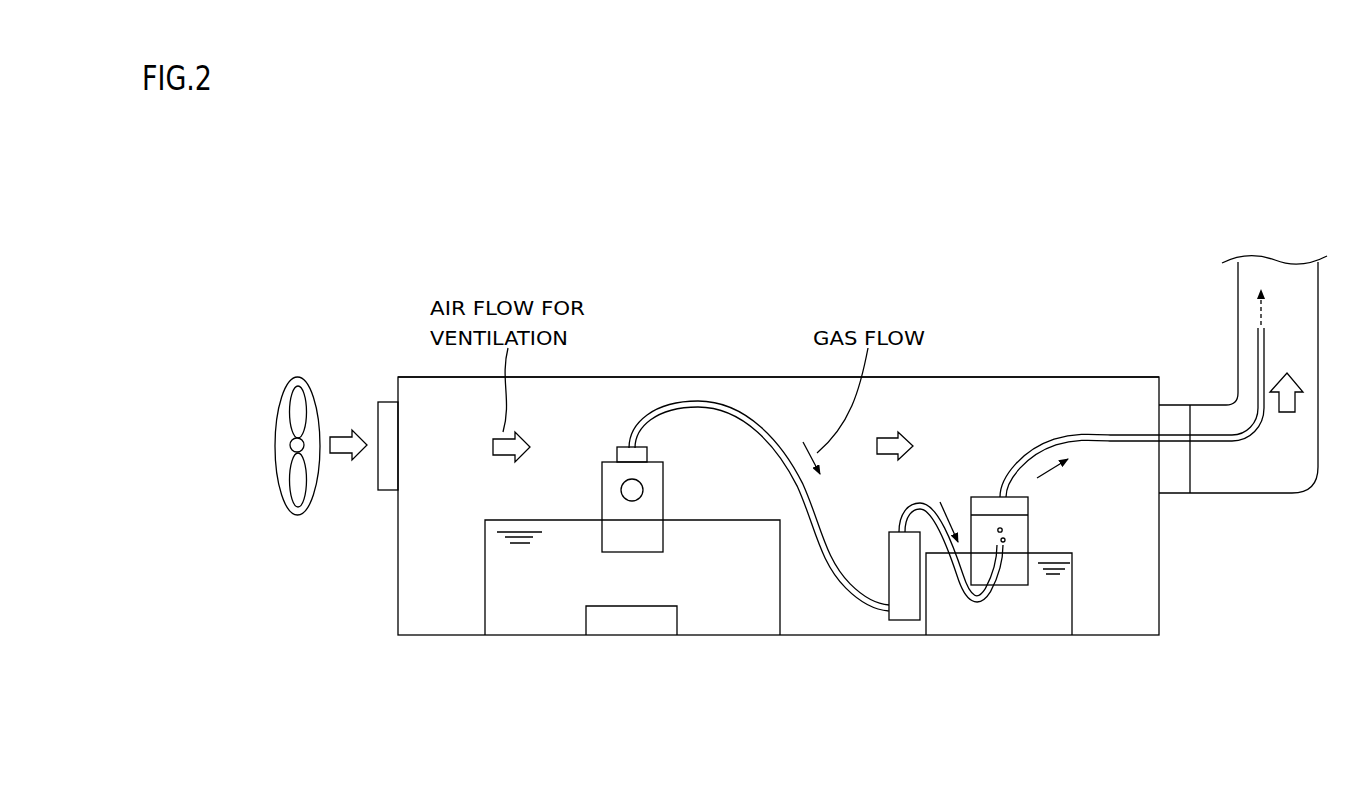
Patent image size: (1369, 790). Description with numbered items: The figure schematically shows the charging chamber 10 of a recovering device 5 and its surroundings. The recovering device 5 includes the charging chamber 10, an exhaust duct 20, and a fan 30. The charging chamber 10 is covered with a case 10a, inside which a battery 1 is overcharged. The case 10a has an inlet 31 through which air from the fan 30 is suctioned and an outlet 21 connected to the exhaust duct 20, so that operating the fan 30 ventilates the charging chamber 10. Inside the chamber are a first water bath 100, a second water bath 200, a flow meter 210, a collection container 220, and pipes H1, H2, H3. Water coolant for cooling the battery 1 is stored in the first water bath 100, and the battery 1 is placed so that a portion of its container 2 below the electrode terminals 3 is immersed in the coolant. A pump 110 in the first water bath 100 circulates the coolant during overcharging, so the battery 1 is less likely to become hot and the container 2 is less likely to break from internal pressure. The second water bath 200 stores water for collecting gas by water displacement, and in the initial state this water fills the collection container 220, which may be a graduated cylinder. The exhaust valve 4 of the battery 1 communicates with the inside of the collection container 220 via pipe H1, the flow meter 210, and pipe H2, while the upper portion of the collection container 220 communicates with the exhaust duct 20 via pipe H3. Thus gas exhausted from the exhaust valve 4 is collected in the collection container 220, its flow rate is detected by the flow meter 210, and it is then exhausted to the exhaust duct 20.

The battery 1 is at (651, 485).
The container 2 is at (665, 496).
The electrode terminals 3 is at (620, 490).
The exhaust valve 4 is at (624, 446).
The recovering device 5 is at (787, 219).
The charging chamber 10 is at (657, 364).
The case 10a is at (753, 376).
The exhaust duct 20 is at (1236, 331).
The outlet 21 is at (1173, 497).
The fan 30 is at (296, 377).
The inlet 31 is at (378, 401).
The first water bath 100 is at (502, 520).
The pump 110 is at (654, 606).
The second water bath 200 is at (1075, 586).
The flow meter 210 is at (905, 621).
The collection container 220 is at (1030, 506).
The pipe H1 is at (758, 408).
The pipe H2 is at (921, 508).
The pipe H3 is at (1065, 436).